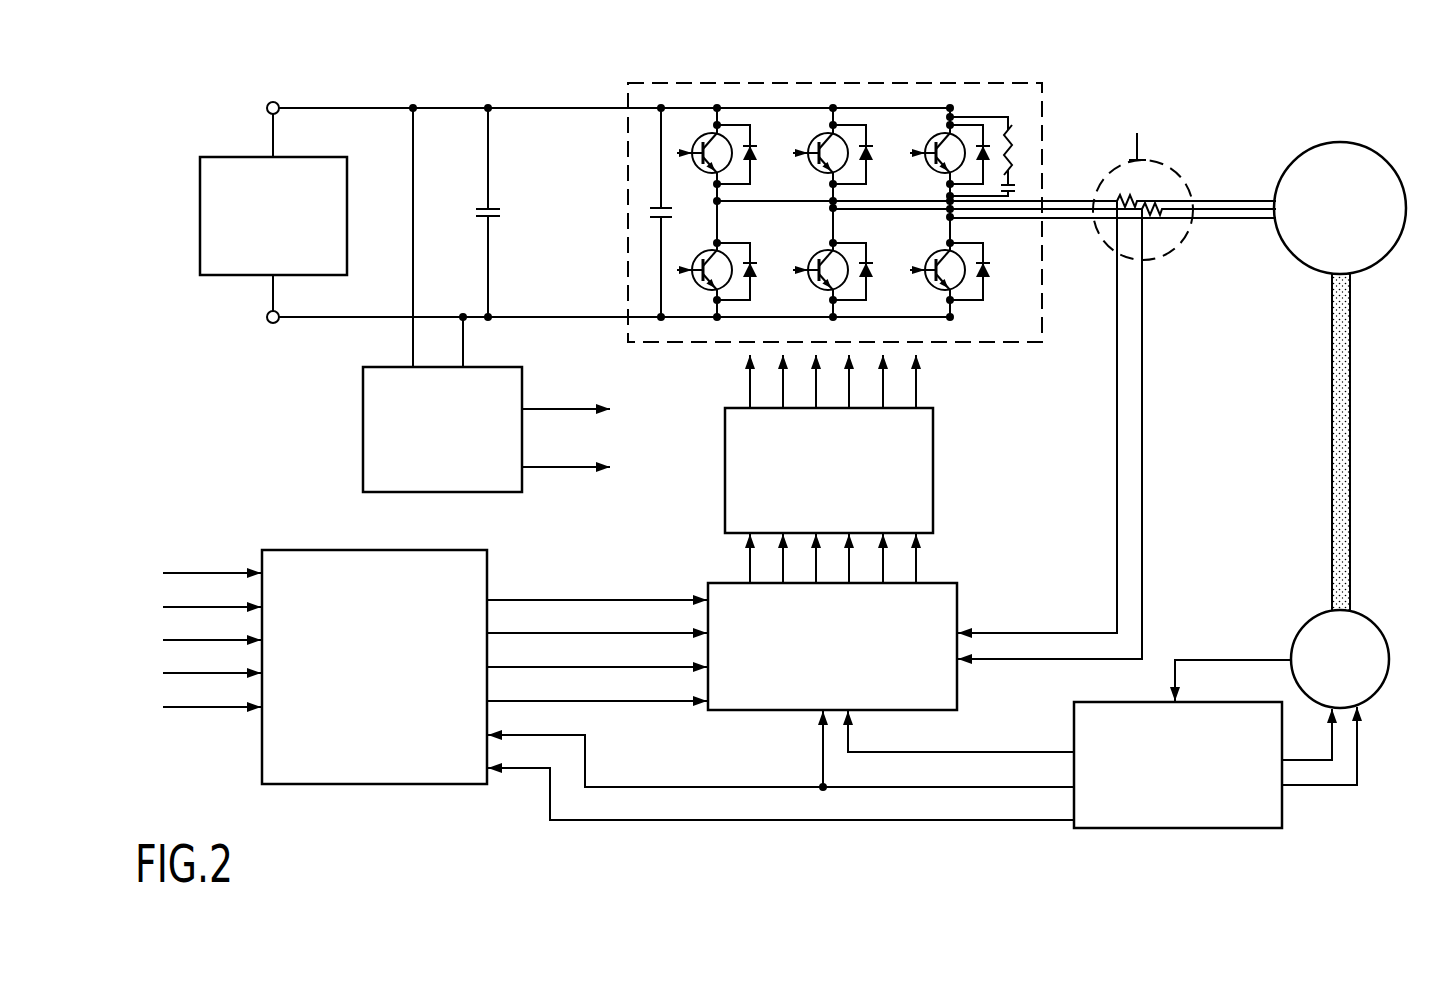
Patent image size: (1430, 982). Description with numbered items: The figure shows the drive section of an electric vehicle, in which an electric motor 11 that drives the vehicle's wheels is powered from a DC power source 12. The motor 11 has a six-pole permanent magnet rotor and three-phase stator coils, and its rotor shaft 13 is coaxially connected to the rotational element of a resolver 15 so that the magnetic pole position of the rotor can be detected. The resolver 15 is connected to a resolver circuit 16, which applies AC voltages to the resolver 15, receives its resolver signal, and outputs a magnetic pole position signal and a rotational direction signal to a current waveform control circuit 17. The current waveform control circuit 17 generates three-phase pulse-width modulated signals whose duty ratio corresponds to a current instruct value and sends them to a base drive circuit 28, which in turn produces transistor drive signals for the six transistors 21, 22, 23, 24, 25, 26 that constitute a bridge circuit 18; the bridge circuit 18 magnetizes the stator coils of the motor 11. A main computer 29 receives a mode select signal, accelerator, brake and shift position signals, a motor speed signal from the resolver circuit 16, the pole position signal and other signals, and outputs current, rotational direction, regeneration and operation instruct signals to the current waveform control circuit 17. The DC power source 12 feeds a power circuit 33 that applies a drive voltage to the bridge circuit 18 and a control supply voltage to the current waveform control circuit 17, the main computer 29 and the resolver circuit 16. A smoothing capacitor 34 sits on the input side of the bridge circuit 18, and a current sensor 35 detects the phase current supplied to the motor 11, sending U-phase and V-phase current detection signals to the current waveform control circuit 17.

The electric motor 11 is at (1378, 267).
The DC power source 12 is at (244, 157).
The rotor shaft 13 is at (1350, 452).
The resolver 15 is at (1375, 620).
The resolver circuit 16 is at (1203, 828).
The current waveform control circuit 17 is at (958, 690).
The bridge circuit 18 is at (838, 201).
The transistor 21 is at (702, 135).
The transistor 22 is at (810, 133).
The transistor 23 is at (930, 135).
The transistor 24 is at (710, 288).
The transistor 25 is at (820, 287).
The transistor 26 is at (923, 290).
The base drive circuit 28 is at (933, 487).
The main computer 29 is at (456, 786).
The power circuit 33 is at (362, 412).
The smoothing capacitor 34 is at (502, 207).
The current sensor 35 is at (1138, 128).